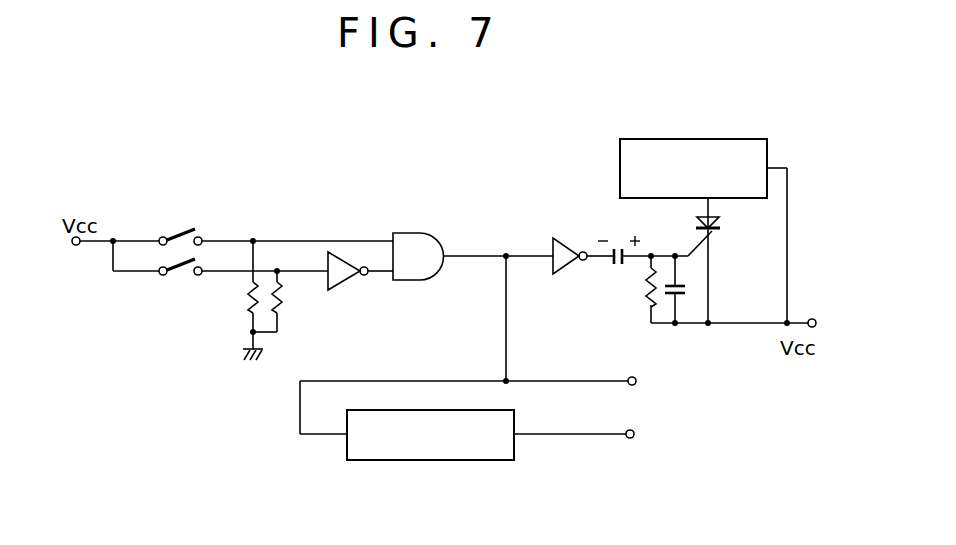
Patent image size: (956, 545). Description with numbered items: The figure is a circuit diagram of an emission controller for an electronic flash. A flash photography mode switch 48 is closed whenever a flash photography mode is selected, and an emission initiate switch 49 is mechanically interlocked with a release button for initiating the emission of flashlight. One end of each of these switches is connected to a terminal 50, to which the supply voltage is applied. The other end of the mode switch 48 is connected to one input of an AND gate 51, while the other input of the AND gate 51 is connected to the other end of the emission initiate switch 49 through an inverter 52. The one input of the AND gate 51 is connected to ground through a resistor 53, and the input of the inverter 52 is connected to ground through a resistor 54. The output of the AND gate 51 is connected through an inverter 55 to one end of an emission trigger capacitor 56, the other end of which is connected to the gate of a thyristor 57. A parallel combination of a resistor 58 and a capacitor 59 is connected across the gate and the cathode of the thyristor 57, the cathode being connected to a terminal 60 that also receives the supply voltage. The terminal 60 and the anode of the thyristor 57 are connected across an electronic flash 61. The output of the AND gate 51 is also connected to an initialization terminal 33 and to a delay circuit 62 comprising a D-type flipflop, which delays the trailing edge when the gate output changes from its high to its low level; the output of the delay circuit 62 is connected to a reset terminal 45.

The flash photography mode switch 48 is at (189, 227).
The emission initiate switch 49 is at (177, 275).
The terminal 50 is at (76, 246).
The AND gate 51 is at (418, 236).
The inverter 52 is at (338, 276).
The resistor 53 is at (248, 306).
The resistor 54 is at (287, 292).
The inverter 55 is at (553, 250).
The emission trigger capacitor 56 is at (617, 266).
The thyristor 57 is at (718, 223).
The resistor 58 is at (646, 283).
The capacitor 59 is at (686, 291).
The terminal 60 is at (811, 319).
The electronic flash 61 is at (700, 138).
The delay circuit 62 is at (514, 425).
The initialization terminal 33 is at (632, 377).
The reset terminal 45 is at (634, 432).